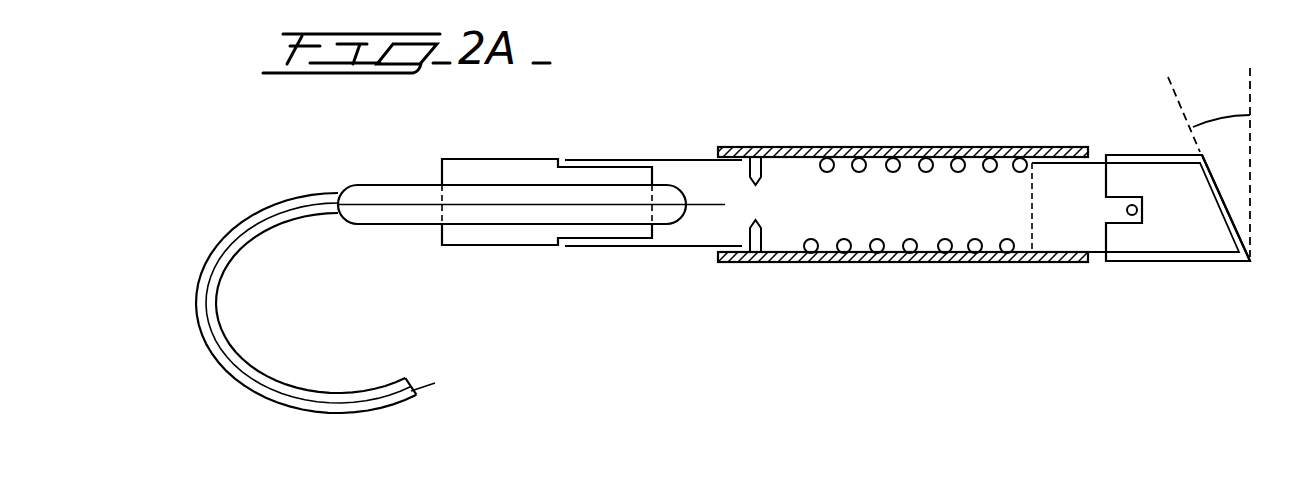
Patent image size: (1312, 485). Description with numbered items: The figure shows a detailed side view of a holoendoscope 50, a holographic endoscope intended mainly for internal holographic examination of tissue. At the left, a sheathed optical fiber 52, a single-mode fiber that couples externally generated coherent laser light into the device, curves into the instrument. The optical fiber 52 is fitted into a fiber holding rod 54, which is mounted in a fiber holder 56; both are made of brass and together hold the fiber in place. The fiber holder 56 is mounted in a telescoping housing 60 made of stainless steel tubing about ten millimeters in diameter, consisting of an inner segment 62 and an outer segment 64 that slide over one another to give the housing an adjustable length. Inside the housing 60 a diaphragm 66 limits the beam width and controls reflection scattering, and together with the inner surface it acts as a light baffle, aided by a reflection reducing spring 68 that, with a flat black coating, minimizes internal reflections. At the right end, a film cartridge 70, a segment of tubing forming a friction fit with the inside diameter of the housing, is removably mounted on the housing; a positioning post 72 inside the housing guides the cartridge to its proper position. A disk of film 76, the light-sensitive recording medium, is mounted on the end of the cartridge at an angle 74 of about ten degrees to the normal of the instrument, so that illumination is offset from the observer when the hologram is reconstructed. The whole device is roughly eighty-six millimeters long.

The holoendoscope 50 is at (978, 84).
The sheathed optical fiber 52 is at (242, 220).
The fiber holding rod 54 is at (402, 184).
The fiber holder 56 is at (511, 159).
The telescoping housing 60 is at (783, 146).
The inner segment 62 is at (653, 159).
The outer segment 64 is at (887, 147).
The diaphragm 66 is at (761, 182).
The reflection reducing spring 68 is at (894, 172).
The film cartridge 70 is at (1143, 155).
The positioning post 72 is at (1127, 210).
The angle 74 is at (1193, 127).
The disk of film 76 is at (1219, 190).